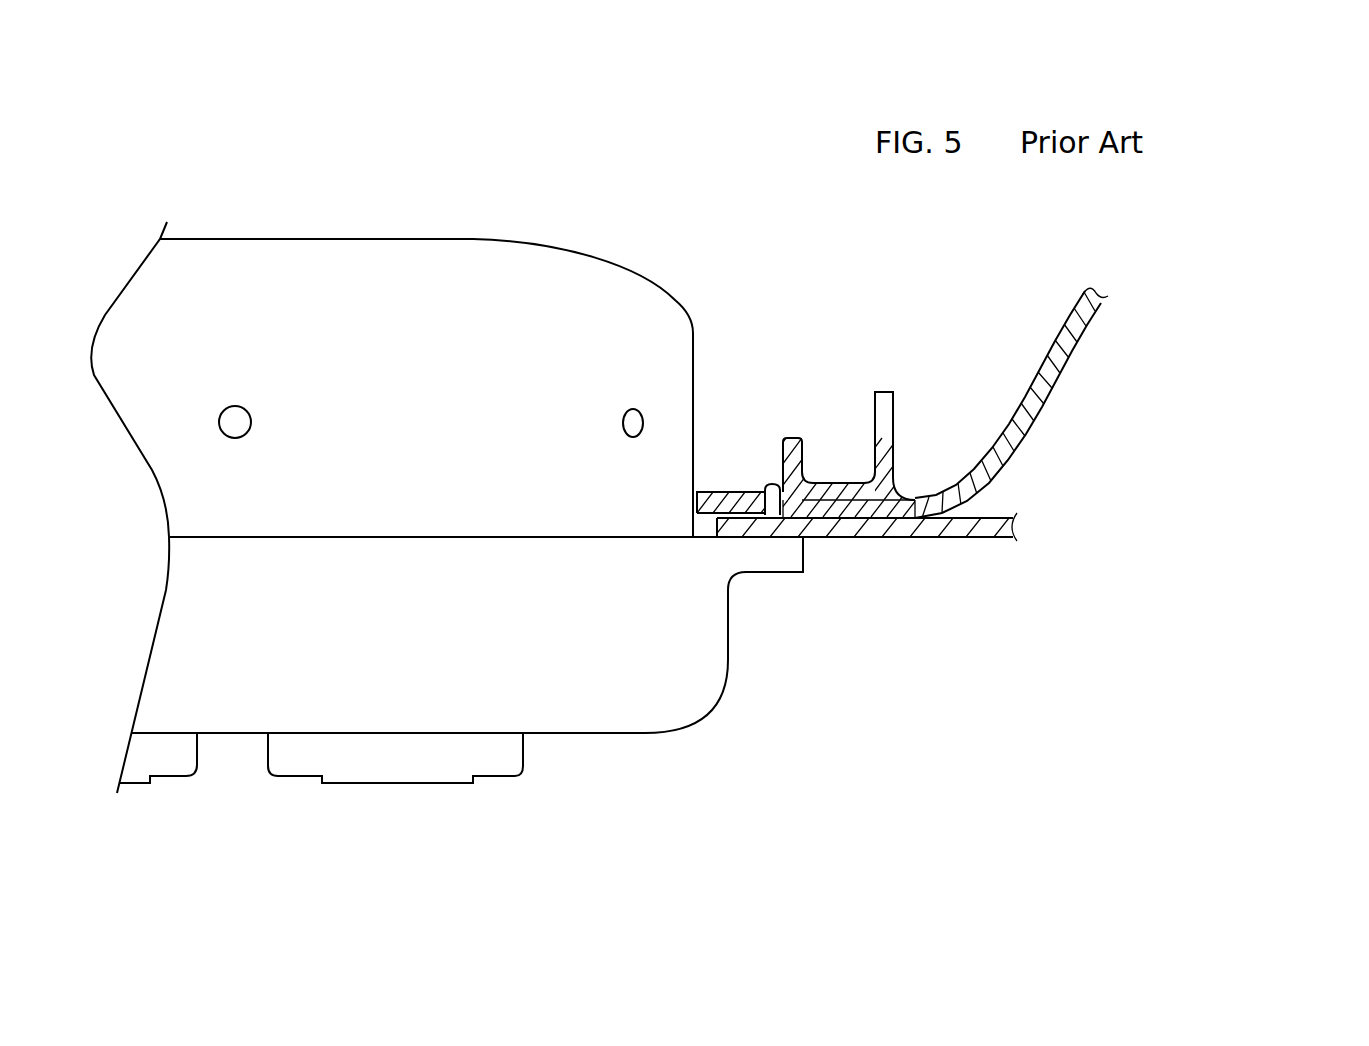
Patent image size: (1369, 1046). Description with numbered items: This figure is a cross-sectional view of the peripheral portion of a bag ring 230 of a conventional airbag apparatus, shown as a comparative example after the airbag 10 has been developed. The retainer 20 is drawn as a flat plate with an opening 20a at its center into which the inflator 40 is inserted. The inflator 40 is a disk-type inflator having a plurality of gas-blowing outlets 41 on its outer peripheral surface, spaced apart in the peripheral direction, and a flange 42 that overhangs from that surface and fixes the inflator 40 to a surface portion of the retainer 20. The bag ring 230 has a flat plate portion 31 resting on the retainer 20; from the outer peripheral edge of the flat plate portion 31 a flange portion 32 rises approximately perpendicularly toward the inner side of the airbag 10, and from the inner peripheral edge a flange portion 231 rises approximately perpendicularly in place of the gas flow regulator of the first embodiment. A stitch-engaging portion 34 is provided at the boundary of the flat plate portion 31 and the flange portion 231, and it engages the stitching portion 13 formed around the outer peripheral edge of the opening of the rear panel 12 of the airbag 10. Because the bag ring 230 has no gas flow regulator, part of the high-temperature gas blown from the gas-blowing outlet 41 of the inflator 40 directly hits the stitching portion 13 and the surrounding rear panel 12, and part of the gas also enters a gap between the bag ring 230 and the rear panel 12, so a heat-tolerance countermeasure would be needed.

The inflator 40 is at (398, 239).
The gas-blowing outlet 41 is at (634, 416).
The flange 42 is at (787, 570).
The retainer 20 is at (933, 538).
The opening 20a is at (701, 540).
The stitching portion 13 is at (769, 510).
The bag ring 230 is at (790, 322).
The flange portion 231 is at (790, 440).
The flat plate portion 31 is at (836, 483).
The flange portion 32 is at (893, 398).
The stitch-engaging portion 34 is at (795, 497).
The airbag 10 is at (1073, 367).
The rear panel 12 is at (1008, 405).